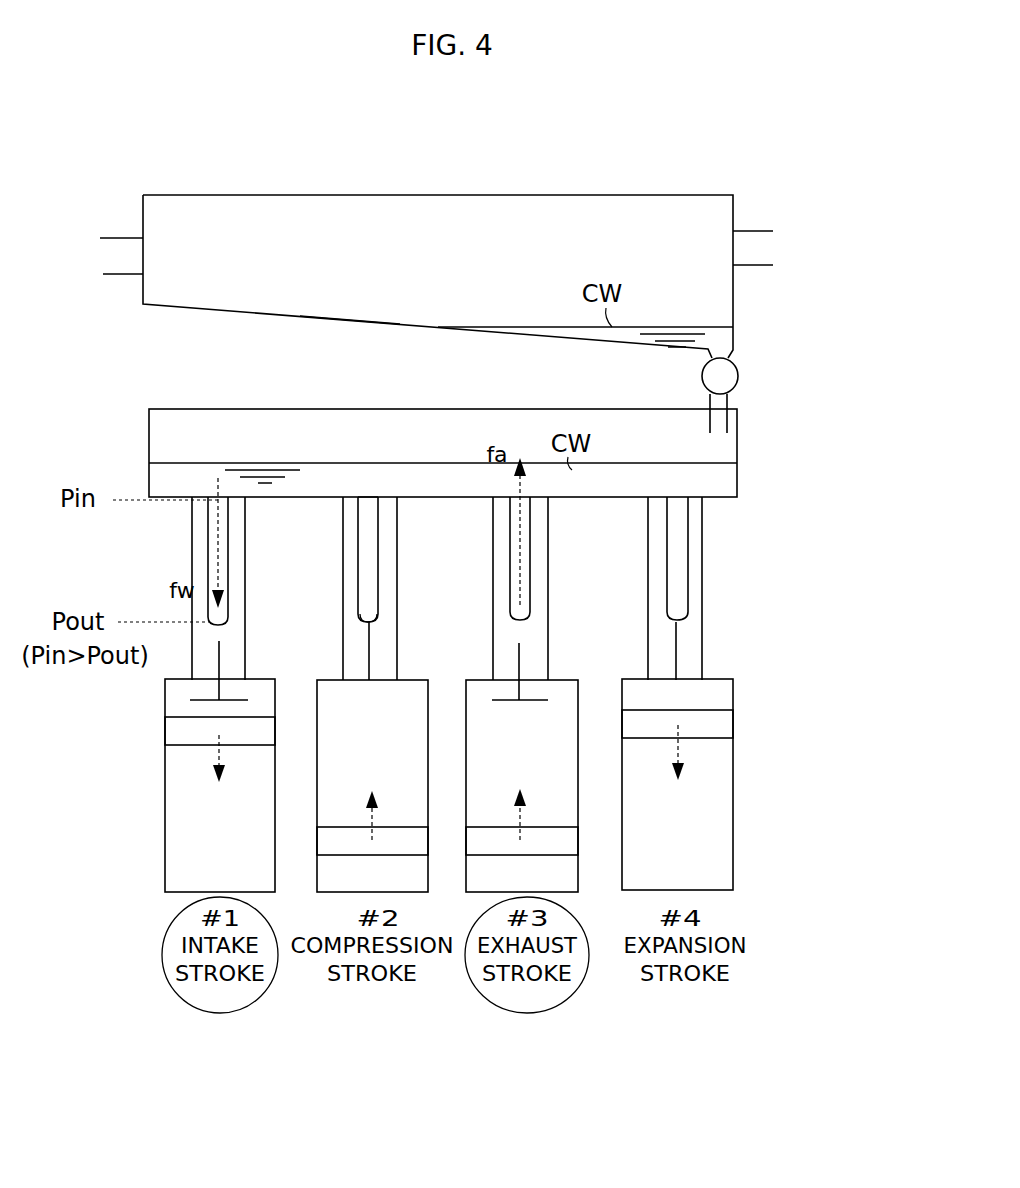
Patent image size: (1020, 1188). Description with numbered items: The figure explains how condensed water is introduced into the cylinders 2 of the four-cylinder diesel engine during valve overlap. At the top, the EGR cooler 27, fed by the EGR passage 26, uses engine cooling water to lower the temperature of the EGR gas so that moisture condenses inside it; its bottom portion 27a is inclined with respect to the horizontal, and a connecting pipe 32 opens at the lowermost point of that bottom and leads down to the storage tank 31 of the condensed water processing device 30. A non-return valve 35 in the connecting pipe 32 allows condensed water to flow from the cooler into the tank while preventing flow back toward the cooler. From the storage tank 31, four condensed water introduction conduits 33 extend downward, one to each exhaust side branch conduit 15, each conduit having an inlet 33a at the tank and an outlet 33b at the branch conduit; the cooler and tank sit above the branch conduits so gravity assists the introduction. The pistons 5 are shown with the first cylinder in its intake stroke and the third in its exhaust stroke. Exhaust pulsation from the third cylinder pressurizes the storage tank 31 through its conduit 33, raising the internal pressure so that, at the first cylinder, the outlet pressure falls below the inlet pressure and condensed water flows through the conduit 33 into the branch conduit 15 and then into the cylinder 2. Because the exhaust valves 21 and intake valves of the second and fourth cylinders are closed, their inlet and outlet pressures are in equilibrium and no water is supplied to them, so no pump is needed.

The cylinder 2 is at (170, 824).
The piston 5 is at (168, 730).
The exhaust side branch conduit 15 is at (192, 547).
The exhaust valve 21 is at (215, 690).
The EGR passage 26 is at (113, 238).
The EGR cooler 27 is at (462, 205).
The bottom portion 27a is at (340, 326).
The condensed water processing device 30 is at (780, 326).
The storage tank 31 is at (752, 450).
The connecting pipe 32 is at (737, 412).
The condensed water introduction conduit 33 is at (358, 549).
The inlet 33a is at (385, 503).
The outlet 33b is at (372, 622).
The non-return valve 35 is at (730, 377).